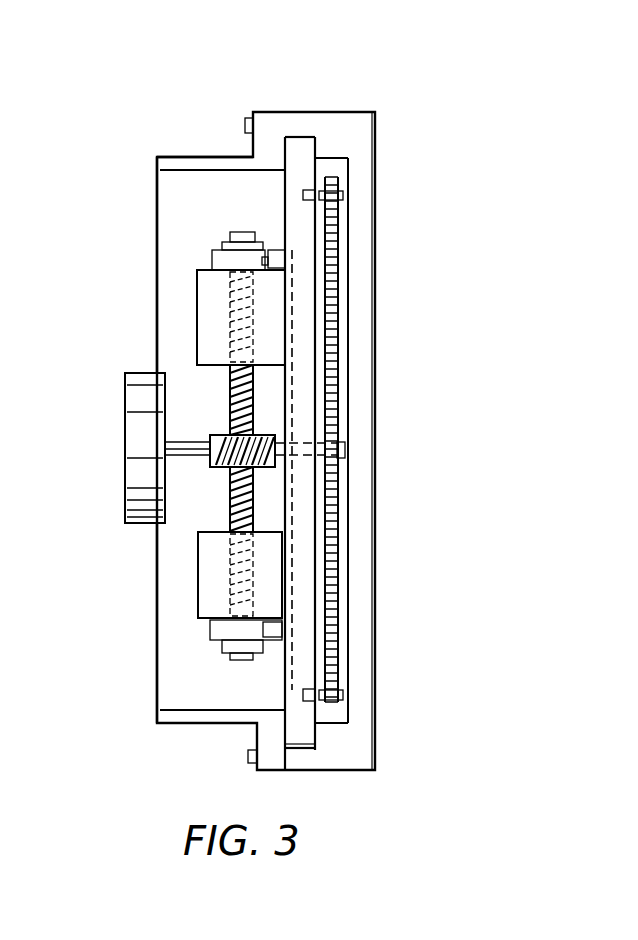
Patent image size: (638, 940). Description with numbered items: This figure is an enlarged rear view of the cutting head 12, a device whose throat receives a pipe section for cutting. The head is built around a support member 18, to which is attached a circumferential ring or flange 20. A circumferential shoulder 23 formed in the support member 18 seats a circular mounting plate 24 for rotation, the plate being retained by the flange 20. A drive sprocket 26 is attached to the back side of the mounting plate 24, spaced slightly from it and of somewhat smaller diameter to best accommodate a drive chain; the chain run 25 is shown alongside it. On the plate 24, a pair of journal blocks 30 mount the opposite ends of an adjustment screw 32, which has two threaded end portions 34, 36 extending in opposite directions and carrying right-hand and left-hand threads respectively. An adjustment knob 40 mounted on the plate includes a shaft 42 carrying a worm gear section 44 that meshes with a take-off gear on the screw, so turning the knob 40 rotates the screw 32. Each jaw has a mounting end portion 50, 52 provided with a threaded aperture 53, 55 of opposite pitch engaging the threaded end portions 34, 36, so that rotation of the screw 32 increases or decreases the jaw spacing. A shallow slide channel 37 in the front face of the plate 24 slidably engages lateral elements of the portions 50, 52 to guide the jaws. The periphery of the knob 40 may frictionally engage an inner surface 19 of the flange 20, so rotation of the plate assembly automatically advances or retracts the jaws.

The cutting head 12 is at (390, 160).
The support member 18 is at (368, 405).
The inner surface 19 is at (236, 710).
The circumferential ring or flange 20 is at (157, 163).
The circumferential shoulder 23 is at (297, 143).
The circular mounting plate 24 is at (315, 197).
The lower chain run 25 is at (336, 550).
The drive sprocket 26 is at (287, 270).
The journal blocks 30 is at (212, 253).
The adjustment screw 32 is at (233, 668).
The threaded end portion 34 is at (230, 392).
The threaded end portion 36 is at (213, 583).
The slide channel 37 is at (290, 417).
The adjustment knob 40 is at (137, 470).
The shaft 42 is at (188, 448).
The worm gear section 44 is at (233, 460).
The mounting end portion 50 is at (208, 302).
The mounting end portion 52 is at (208, 572).
The threaded aperture 53 is at (230, 330).
The threaded aperture 55 is at (225, 560).